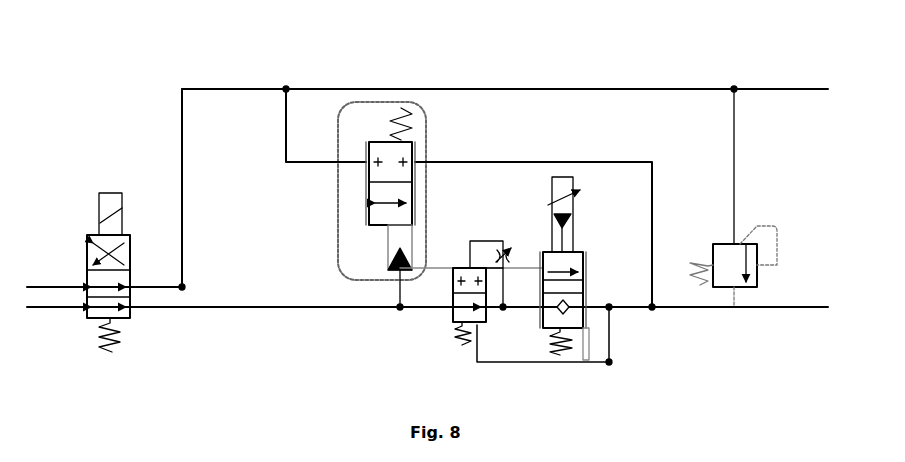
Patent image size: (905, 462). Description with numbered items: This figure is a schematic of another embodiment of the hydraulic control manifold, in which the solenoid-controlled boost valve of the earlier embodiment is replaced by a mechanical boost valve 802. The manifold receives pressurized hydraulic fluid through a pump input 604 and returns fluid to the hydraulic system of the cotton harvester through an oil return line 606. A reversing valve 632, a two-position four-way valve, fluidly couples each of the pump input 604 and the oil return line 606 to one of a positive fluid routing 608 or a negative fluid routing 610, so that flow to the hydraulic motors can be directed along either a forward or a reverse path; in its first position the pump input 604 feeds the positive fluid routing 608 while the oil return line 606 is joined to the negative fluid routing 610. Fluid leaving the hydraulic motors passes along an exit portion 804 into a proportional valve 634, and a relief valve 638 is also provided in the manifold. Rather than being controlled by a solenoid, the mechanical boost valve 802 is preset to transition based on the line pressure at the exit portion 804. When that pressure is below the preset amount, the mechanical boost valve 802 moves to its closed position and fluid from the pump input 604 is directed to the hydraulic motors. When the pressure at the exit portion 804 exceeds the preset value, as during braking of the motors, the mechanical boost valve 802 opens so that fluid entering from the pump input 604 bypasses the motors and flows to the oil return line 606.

The pump input 604 is at (828, 89).
The oil return line 606 is at (828, 307).
The positive fluid routing 608 is at (50, 287).
The negative fluid routing 610 is at (52, 308).
The reversing valve 632 is at (108, 360).
The proportional valve 634 is at (602, 256).
The relief valve 638 is at (783, 222).
The mechanical boost valve 802 is at (333, 201).
The exit portion 804 is at (401, 309).